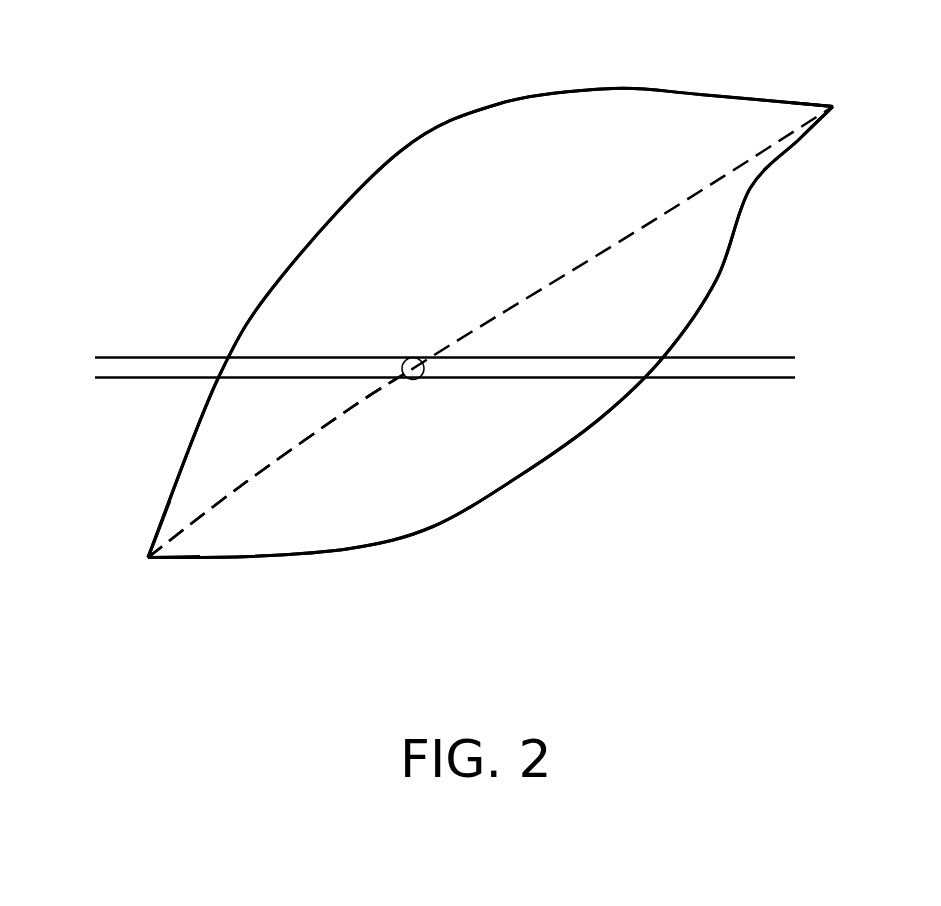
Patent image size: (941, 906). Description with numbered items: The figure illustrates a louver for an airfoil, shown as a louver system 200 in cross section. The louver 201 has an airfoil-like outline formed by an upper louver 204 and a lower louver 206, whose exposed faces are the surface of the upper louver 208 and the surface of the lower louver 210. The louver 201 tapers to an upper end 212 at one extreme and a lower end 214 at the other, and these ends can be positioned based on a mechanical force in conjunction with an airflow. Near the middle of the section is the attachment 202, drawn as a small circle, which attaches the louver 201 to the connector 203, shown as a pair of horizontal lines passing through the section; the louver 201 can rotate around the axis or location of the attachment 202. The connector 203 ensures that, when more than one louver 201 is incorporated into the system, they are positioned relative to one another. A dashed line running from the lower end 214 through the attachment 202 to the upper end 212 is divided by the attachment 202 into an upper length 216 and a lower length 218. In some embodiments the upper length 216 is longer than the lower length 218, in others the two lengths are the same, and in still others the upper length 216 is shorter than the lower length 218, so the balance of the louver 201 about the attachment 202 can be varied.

The louver system 200 is at (566, 630).
The louver 201 is at (298, 302).
The attachment 202 is at (412, 358).
The connector 203 is at (740, 368).
The upper louver 204 is at (670, 127).
The lower louver 206 is at (412, 500).
The surface of the upper louver 208 is at (590, 90).
The surface of the lower louver 210 is at (275, 558).
The upper end 212 is at (833, 108).
The lower end 214 is at (148, 559).
The upper length 216 is at (661, 220).
The lower length 218 is at (242, 492).